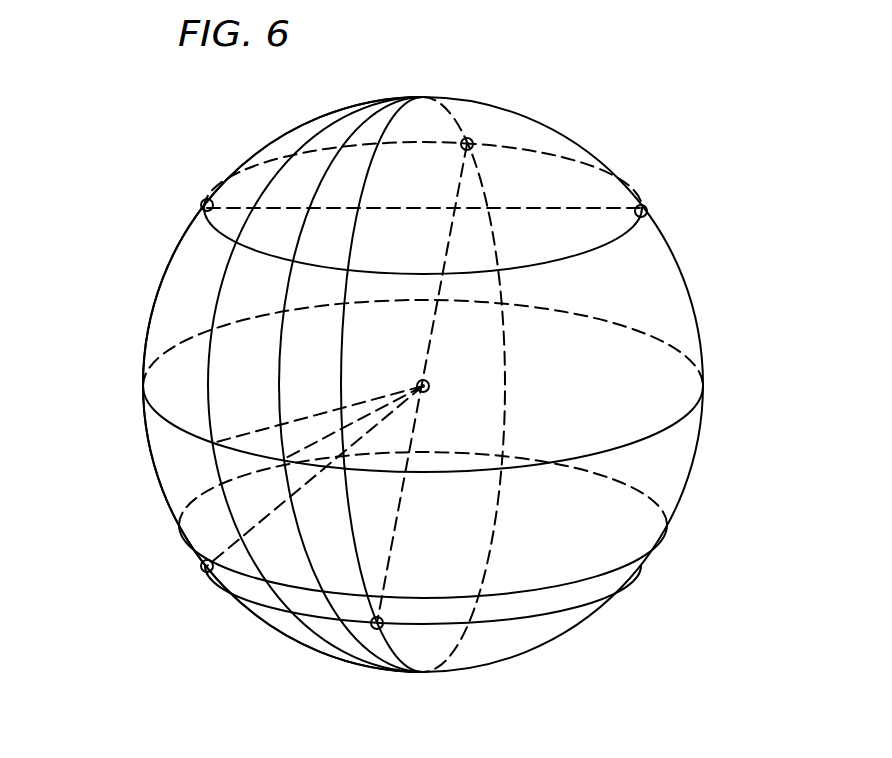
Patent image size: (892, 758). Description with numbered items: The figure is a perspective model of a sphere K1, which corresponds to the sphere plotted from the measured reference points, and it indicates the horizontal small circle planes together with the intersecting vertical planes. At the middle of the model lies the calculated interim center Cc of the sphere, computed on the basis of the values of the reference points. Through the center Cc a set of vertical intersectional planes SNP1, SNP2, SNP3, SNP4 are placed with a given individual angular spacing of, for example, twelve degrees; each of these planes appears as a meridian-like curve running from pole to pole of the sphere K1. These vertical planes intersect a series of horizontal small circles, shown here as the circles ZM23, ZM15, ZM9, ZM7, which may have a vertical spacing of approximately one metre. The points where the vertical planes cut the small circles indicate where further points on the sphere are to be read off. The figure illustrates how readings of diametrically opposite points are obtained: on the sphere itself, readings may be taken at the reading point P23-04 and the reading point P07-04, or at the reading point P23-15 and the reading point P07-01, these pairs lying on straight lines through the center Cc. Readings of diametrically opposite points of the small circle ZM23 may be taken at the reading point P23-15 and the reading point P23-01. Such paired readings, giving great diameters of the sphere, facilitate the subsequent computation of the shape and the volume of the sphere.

The sphere K1 is at (165, 299).
The vertical intersectional plane SNP1 is at (148, 442).
The vertical intersectional plane SNP2 is at (215, 312).
The vertical intersectional plane SNP3 is at (277, 362).
The vertical intersectional plane SNP4 is at (370, 338).
The horizontal small circle ZM23 is at (217, 229).
The horizontal small circle ZM15 is at (667, 433).
The horizontal small circle ZM9 is at (605, 578).
The horizontal small circle ZM7 is at (574, 608).
The interim center Cc is at (333, 473).
The reading point P23-04 is at (473, 142).
The reading point P23-01 is at (201, 206).
The reading point P23-15 is at (648, 209).
The reading point P07-01 is at (201, 567).
The reading point P07-04 is at (372, 630).